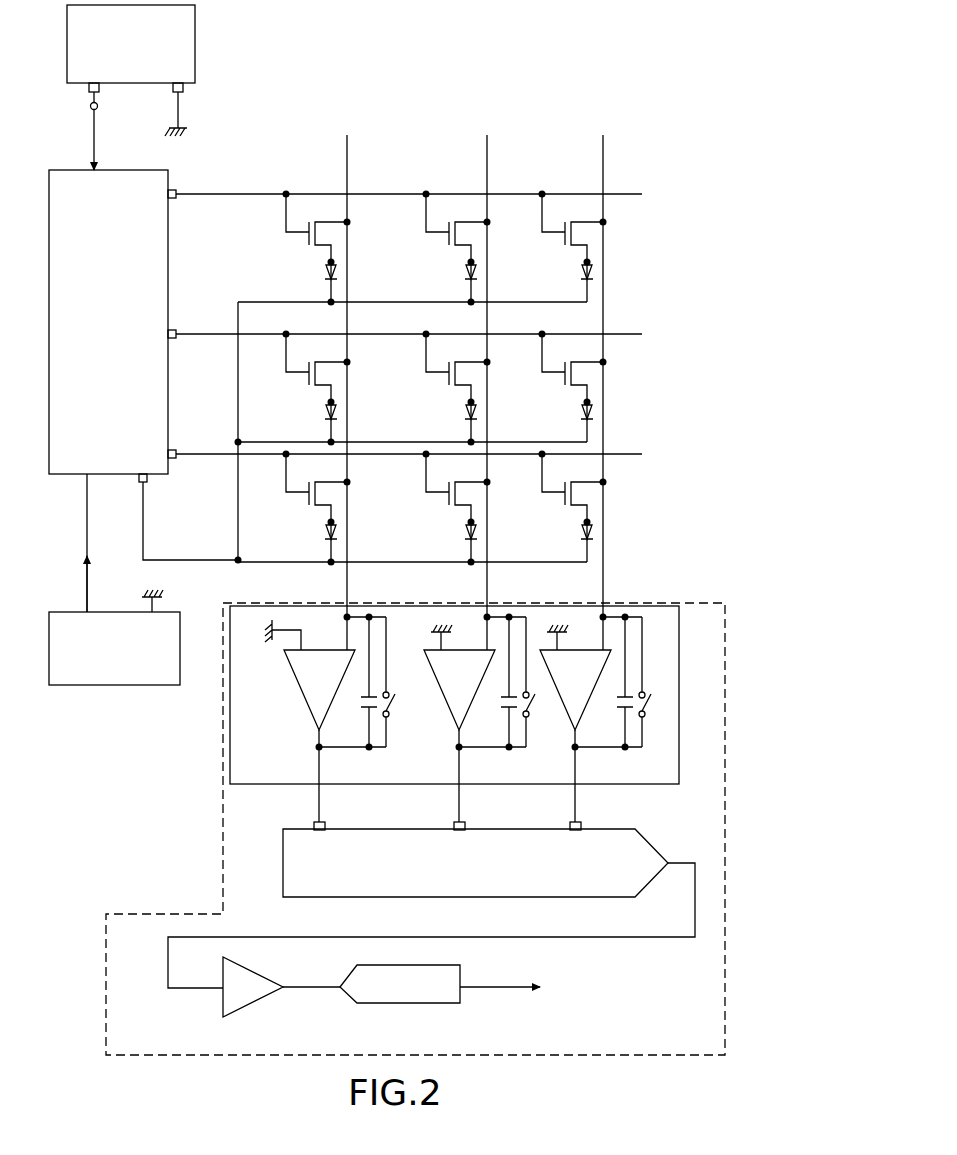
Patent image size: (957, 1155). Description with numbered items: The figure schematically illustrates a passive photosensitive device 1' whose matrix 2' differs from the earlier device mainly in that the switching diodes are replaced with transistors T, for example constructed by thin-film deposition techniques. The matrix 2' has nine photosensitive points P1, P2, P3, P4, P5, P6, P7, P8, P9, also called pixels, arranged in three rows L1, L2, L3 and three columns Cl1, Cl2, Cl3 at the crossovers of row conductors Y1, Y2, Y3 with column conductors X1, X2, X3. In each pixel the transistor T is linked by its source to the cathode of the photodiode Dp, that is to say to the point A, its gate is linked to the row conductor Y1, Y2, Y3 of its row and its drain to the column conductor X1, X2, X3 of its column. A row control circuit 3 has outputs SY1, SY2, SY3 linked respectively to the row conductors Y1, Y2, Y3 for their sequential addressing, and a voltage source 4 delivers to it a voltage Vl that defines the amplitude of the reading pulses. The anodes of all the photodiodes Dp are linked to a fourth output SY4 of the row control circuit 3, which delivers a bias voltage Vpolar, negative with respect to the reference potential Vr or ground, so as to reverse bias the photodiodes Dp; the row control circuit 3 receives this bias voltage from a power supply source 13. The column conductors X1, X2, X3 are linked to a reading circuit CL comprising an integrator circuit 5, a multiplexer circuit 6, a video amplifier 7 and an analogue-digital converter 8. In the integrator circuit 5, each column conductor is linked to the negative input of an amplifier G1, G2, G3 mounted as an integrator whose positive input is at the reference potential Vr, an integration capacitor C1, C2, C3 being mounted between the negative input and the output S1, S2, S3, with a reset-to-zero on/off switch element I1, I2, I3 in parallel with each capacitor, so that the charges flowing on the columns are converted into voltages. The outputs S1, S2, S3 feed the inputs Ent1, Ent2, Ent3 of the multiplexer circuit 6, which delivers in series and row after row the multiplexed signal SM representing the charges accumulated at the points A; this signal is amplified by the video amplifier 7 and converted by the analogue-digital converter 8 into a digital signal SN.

The photosensitive device 1' is at (593, 22).
The matrix 2' is at (657, 29).
The row control circuit 3 is at (49, 275).
The voltage source 4 is at (195, 50).
The integrator circuit 5 is at (680, 754).
The multiplexer circuit 6 is at (434, 894).
The video amplifier 7 is at (268, 994).
The analogue-digital converter 8 is at (427, 1003).
The power supply source 13 is at (96, 685).
The reading circuit CL is at (219, 783).
The row L1 is at (445, 231).
The row L2 is at (445, 371).
The row L3 is at (445, 491).
The row conductor Y1 is at (615, 194).
The row conductor Y2 is at (620, 334).
The row conductor Y3 is at (620, 454).
The column conductor X1 is at (347, 153).
The column conductor X2 is at (487, 153).
The column conductor X3 is at (603, 153).
The column Cl1 is at (337, 146).
The column Cl2 is at (477, 146).
The column Cl3 is at (595, 146).
The output of the row control circuit SY1 is at (175, 190).
The output of the row control circuit SY2 is at (173, 331).
The output of the row control circuit SY3 is at (174, 448).
The output of the row control circuit SY4 is at (143, 482).
The photosensitive point P1 is at (273, 249).
The photosensitive point P2 is at (378, 284).
The photosensitive point P3 is at (510, 250).
The photosensitive point P4 is at (215, 390).
The photosensitive point P5 is at (378, 424).
The photosensitive point P6 is at (510, 390).
The photosensitive point P7 is at (215, 510).
The photosensitive point P8 is at (390, 510).
The photosensitive point P9 is at (510, 510).
The transistor T is at (215, 250).
The photosensitive diode Dp is at (328, 280).
The point A is at (329, 262).
The amplifier G1 is at (300, 688).
The amplifier G2 is at (450, 691).
The amplifier G3 is at (571, 719).
The integration capacitor C1 is at (362, 703).
The integration capacitor C2 is at (501, 706).
The integration capacitor C3 is at (618, 708).
The on/off switch element I1 is at (389, 690).
The on/off switch element I2 is at (529, 690).
The on/off switch element I3 is at (646, 690).
The output of the amplifier S1 is at (316, 748).
The output of the amplifier S2 is at (456, 748).
The output of the amplifier S3 is at (575, 747).
The input of the multiplexer circuit Ent1 is at (313, 825).
The input of the multiplexer circuit Ent2 is at (454, 825).
The input of the multiplexer circuit Ent3 is at (535, 815).
The multiplexed signal SM is at (434, 914).
The digital signal SN is at (500, 974).
The voltage Vl is at (105, 131).
The reference potential Vr is at (180, 110).
The polarization voltage Vpolar is at (57, 543).